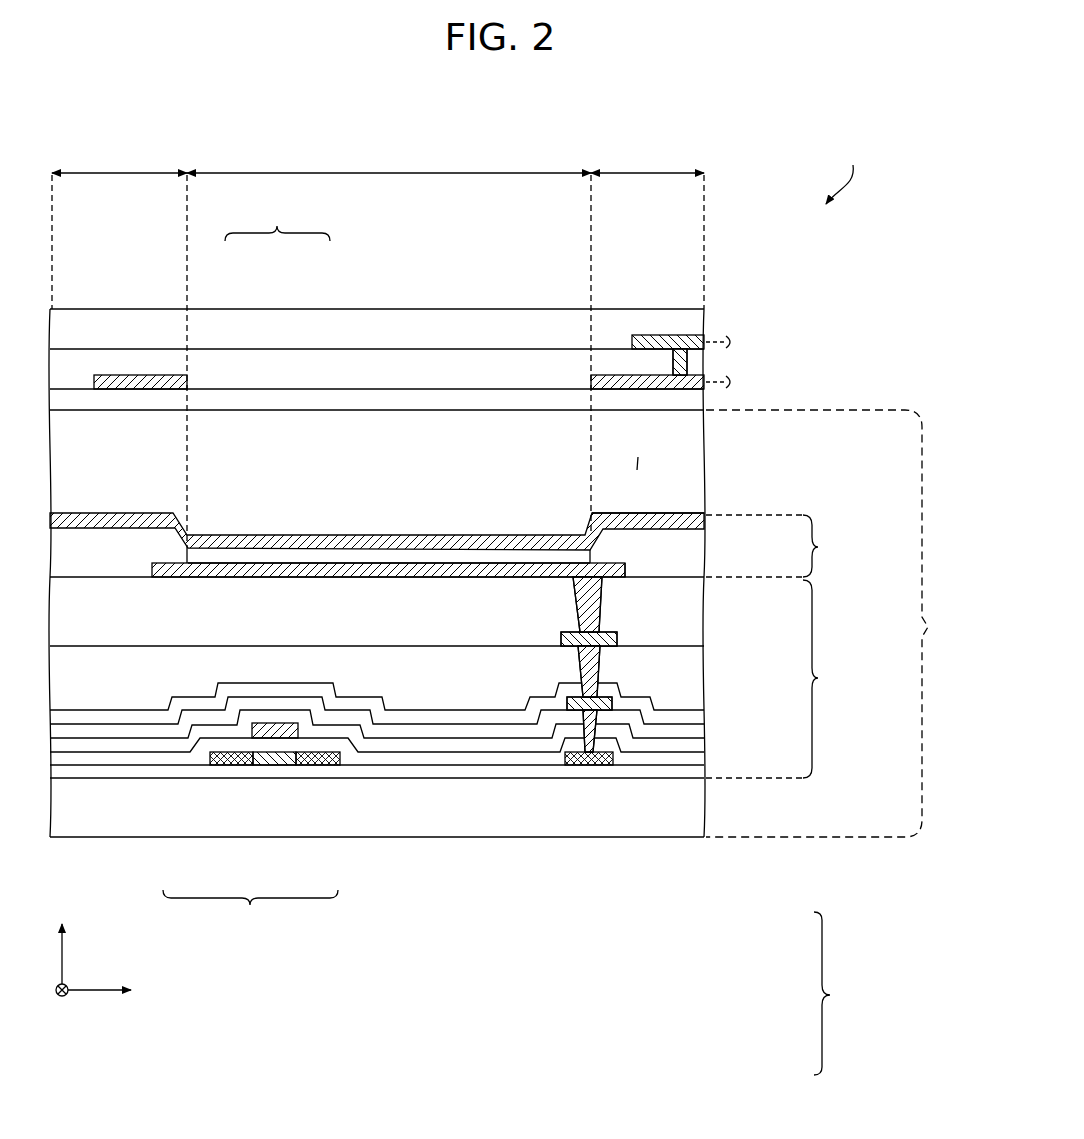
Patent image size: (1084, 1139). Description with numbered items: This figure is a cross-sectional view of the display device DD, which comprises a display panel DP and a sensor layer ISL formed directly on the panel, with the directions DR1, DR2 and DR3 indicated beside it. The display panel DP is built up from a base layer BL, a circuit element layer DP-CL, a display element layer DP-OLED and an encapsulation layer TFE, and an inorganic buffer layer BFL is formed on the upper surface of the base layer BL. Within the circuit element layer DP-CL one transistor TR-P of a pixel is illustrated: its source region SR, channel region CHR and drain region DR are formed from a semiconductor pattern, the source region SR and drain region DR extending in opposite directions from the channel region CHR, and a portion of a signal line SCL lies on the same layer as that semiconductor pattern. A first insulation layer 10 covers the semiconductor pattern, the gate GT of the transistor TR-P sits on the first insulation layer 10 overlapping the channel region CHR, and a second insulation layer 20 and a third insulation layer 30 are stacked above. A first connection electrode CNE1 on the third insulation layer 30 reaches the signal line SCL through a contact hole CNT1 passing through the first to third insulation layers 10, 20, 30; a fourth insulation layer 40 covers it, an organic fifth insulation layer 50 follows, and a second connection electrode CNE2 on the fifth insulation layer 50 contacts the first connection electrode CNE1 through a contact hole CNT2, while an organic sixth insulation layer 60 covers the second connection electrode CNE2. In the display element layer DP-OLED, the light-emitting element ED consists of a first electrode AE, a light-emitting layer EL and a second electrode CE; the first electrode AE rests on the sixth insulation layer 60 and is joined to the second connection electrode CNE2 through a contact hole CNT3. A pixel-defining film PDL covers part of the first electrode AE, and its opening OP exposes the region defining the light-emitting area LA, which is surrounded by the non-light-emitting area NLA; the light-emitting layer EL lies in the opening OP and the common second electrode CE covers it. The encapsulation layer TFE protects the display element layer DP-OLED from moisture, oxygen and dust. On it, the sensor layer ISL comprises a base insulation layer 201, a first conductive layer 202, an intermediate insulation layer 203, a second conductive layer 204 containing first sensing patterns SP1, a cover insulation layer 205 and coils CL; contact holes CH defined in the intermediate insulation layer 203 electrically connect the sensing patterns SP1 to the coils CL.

The non-light-emitting area NLA is at (378, 227).
The light-emitting area LA is at (389, 347).
The light-emitting element ED is at (277, 220).
The coil CL is at (137, 375).
The first electrode AE is at (213, 567).
The light-emitting layer EL is at (253, 557).
The second electrode CE is at (295, 543).
The cover insulation layer 205 is at (374, 322).
The intermediate insulation layer 203 is at (427, 360).
The base insulation layer 201 is at (483, 400).
The first sensing pattern SP1 is at (663, 340).
The contact hole CH is at (685, 349).
The display device DD is at (848, 171).
The second conductive layer 204 is at (742, 342).
The first conductive layer 202 is at (742, 382).
The encapsulation layer TFE is at (638, 463).
The opening OP is at (677, 530).
The pixel-defining film PDL is at (687, 557).
The display element layer DP-OLED is at (859, 546).
The sixth insulation layer 60 is at (693, 598).
The contact hole CNT3 is at (603, 592).
The fifth insulation layer 50 is at (693, 668).
The circuit element layer DP-CL is at (795, 679).
The fourth insulation layer 40 is at (693, 715).
The third insulation layer 30 is at (693, 728).
The second insulation layer 20 is at (693, 742).
The first insulation layer 10 is at (693, 757).
The base layer BL is at (690, 812).
The display panel DP is at (833, 623).
The gate electrode GT is at (260, 727).
The source region SR is at (220, 767).
The channel region CHR is at (278, 767).
The drain region DR is at (317, 767).
The buffer layer BFL is at (417, 772).
The second connection electrode CNE2 is at (563, 637).
The signal line SCL is at (578, 767).
The contact hole CNT2 is at (600, 700).
The first connection electrode CNE1 is at (567, 703).
The contact hole CNT1 is at (594, 765).
The transistor TR-P is at (250, 910).
The first direction DR1 is at (123, 990).
The second direction DR2 is at (62, 1006).
The third direction DR3 is at (62, 941).
The sensor layer ISL is at (822, 995).